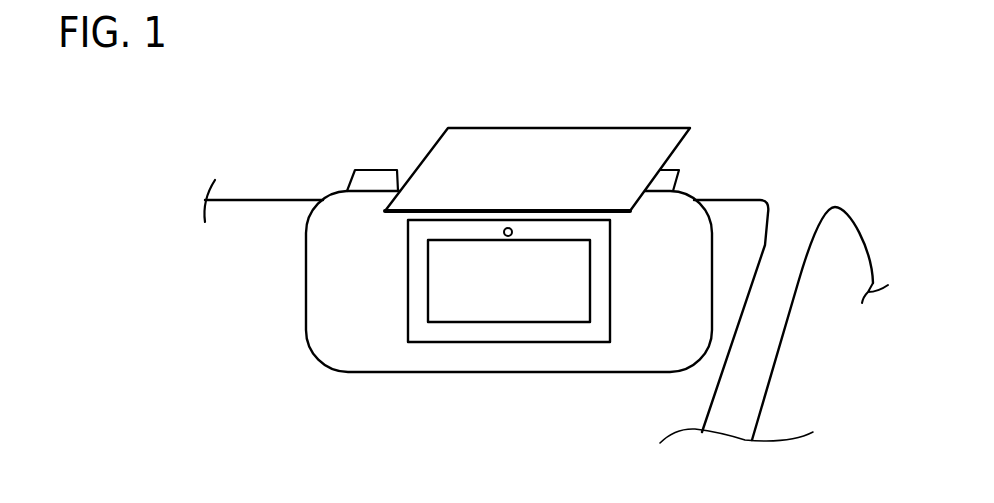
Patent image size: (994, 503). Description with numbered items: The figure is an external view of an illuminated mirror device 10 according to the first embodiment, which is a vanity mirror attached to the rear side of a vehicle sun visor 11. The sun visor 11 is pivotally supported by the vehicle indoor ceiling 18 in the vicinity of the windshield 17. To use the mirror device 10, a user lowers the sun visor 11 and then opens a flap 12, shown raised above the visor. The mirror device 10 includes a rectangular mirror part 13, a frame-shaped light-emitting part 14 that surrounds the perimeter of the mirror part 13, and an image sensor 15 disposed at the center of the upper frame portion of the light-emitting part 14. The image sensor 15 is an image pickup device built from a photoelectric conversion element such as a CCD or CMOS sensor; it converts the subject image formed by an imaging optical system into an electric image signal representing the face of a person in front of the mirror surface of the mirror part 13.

The illuminated mirror device 10 is at (495, 279).
The sun visor 11 is at (320, 295).
The flap 12 is at (662, 152).
The mirror part 13 is at (557, 307).
The light-emitting part 14 is at (462, 349).
The image sensor 15 is at (511, 227).
The windshield 17 is at (745, 217).
The vehicle indoor ceiling 18 is at (280, 188).